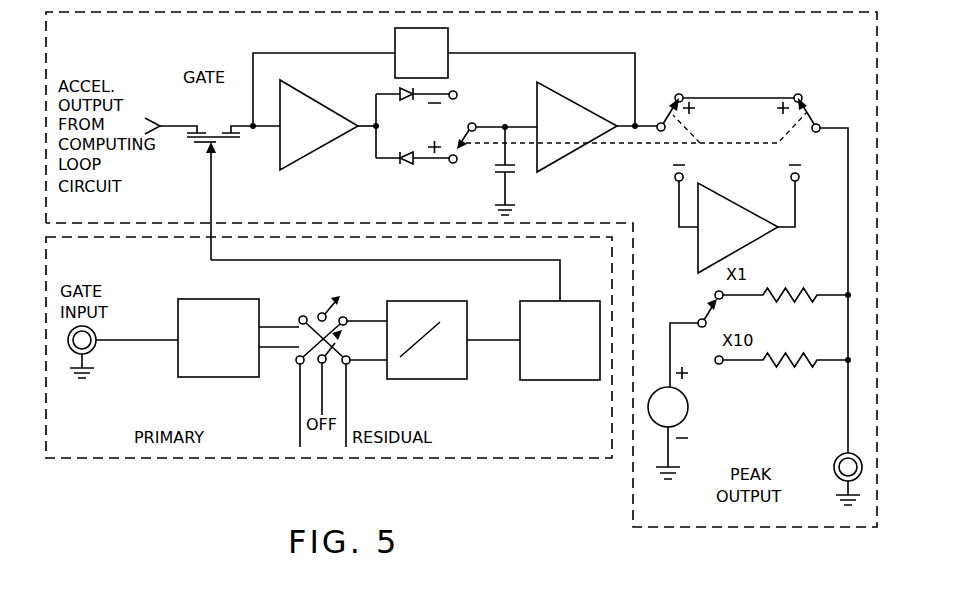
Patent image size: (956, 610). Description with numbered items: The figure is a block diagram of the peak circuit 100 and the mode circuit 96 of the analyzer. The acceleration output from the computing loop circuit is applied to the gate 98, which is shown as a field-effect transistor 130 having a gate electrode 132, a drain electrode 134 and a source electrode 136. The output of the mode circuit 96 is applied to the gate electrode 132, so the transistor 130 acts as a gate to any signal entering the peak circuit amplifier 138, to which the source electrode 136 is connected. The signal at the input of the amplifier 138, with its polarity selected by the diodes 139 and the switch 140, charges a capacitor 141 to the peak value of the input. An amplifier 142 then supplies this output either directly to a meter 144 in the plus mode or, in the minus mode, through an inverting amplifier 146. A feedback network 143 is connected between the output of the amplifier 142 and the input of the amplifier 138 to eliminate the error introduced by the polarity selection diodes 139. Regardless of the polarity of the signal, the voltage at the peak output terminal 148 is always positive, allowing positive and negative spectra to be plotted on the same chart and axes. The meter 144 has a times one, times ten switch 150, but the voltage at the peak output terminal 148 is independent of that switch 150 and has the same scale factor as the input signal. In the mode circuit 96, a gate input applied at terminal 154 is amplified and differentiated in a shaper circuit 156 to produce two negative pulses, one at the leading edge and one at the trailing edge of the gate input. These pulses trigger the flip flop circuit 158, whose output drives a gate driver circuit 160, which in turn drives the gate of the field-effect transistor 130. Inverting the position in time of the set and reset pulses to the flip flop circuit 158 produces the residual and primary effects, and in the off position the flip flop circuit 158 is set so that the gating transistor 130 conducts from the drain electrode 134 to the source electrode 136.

The mode circuit 96 is at (503, 458).
The gate 98 is at (201, 143).
The peak circuit 100 is at (663, 527).
The field-effect transistor 130 is at (238, 138).
The gate electrode 132 is at (213, 156).
The drain electrode 134 is at (188, 124).
The source electrode 136 is at (222, 124).
The amplifier 138 is at (300, 84).
The diodes 139 is at (410, 102).
The switch 140 is at (458, 129).
The capacitor 141 is at (514, 174).
The amplifier 142 is at (570, 90).
The feedback network 143 is at (448, 42).
The meter 144 is at (686, 398).
The inverting amplifier 146 is at (728, 196).
The peak output terminal 148 is at (832, 456).
The times one, times 10 switch 150 is at (708, 312).
The terminal 154 is at (90, 357).
The shaper circuit 156 is at (206, 299).
The flip flop circuit 158 is at (415, 301).
The gate driver circuit 160 is at (558, 380).